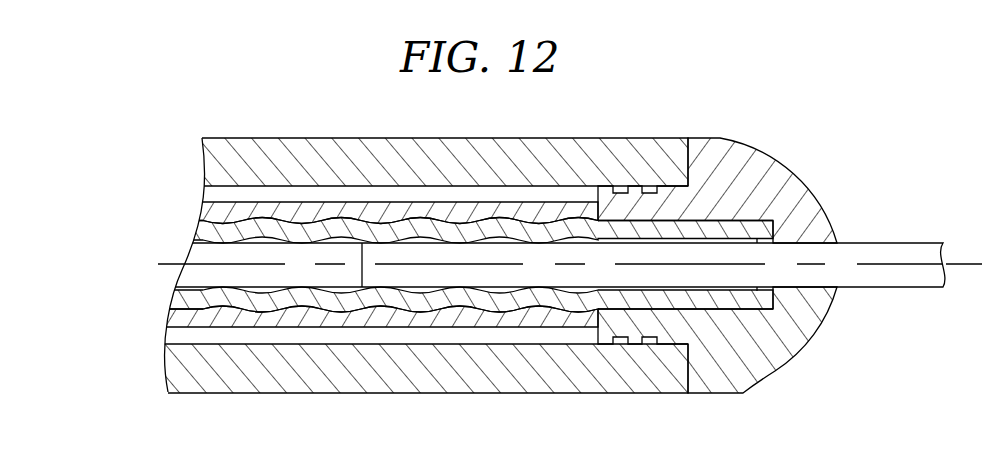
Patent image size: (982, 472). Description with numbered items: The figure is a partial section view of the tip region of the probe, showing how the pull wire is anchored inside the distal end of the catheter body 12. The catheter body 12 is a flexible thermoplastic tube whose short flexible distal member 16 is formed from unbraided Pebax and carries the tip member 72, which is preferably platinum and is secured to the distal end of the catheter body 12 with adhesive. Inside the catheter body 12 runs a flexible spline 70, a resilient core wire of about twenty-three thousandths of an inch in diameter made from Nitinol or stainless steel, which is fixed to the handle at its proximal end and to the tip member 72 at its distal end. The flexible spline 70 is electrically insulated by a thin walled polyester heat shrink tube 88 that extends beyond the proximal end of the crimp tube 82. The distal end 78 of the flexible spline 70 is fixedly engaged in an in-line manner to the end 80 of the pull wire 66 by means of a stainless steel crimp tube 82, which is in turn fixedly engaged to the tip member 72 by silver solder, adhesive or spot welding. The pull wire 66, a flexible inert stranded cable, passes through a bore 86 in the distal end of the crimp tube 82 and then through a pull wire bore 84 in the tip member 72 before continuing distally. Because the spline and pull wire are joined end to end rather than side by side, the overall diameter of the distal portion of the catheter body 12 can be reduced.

The catheter body 12 is at (528, 120).
The distal member 16 is at (635, 153).
The pull wire 66 is at (637, 280).
The flexible spline 70 is at (166, 232).
The tip member 72 is at (748, 182).
The distal end of the flexible spline 78 is at (348, 252).
The end of the pull wire 80 is at (415, 272).
The crimp tube 82 is at (382, 227).
The pull wire bore 84 is at (820, 290).
The bore 86 is at (768, 292).
The heat shrink tube 88 is at (520, 320).